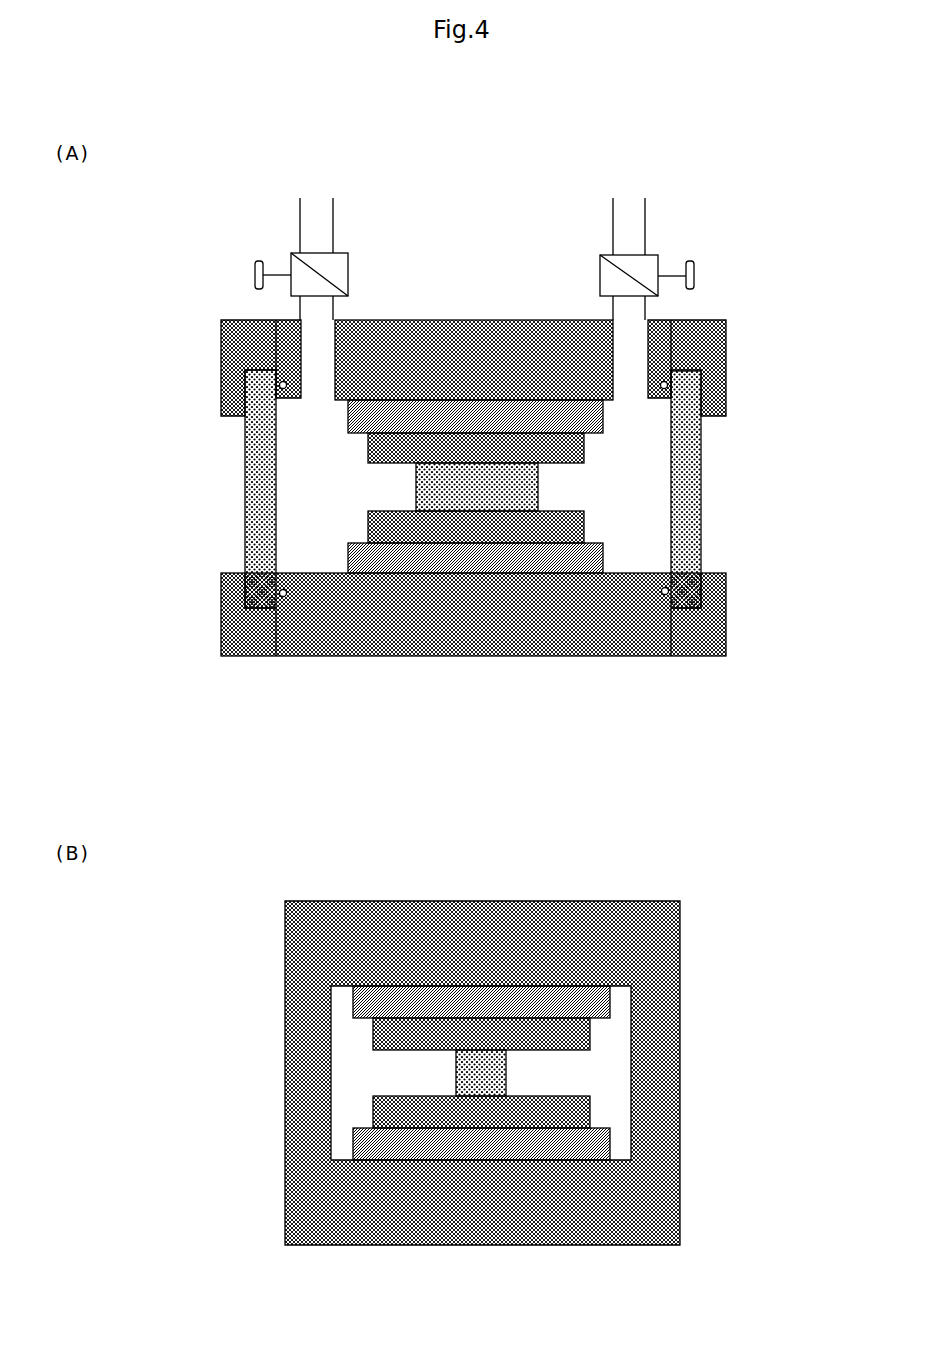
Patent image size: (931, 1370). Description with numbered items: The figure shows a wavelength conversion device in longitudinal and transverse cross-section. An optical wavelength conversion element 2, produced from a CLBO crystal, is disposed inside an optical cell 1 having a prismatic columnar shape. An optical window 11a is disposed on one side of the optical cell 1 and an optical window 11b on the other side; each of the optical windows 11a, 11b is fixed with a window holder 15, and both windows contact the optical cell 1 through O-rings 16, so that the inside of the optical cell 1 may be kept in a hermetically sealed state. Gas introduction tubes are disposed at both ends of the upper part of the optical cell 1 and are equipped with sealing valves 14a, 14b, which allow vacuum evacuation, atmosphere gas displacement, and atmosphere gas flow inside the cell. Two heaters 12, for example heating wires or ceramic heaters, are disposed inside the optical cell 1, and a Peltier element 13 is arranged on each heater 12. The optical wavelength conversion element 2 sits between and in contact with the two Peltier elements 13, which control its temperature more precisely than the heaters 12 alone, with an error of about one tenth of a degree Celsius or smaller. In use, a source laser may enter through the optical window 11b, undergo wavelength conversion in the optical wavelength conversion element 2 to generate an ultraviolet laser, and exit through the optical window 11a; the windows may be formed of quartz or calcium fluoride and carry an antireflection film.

In FIG. 4A, the optical cell 1 is at (398, 340).
In FIG. 4B, the optical cell 1 is at (340, 1188).
In FIG. 4A, the optical wavelength conversion element 2 is at (497, 493).
In FIG. 4B, the optical wavelength conversion element 2 is at (478, 1065).
In FIG. 4A, the optical window 11a is at (248, 598).
In FIG. 4A, the optical window 11b is at (668, 600).
In FIG. 4A, the heater 12 is at (460, 410).
In FIG. 4B, the heater 12 is at (395, 1000).
In FIG. 4A, the Peltier element 13 is at (542, 440).
In FIG. 4B, the Peltier element 13 is at (552, 1025).
In FIG. 4A, the sealing valve 14a is at (284, 262).
In FIG. 4A, the sealing valve 14b is at (648, 250).
In FIG. 4A, the window holder 15 is at (225, 617).
In FIG. 4A, the O-ring 16 is at (213, 365).